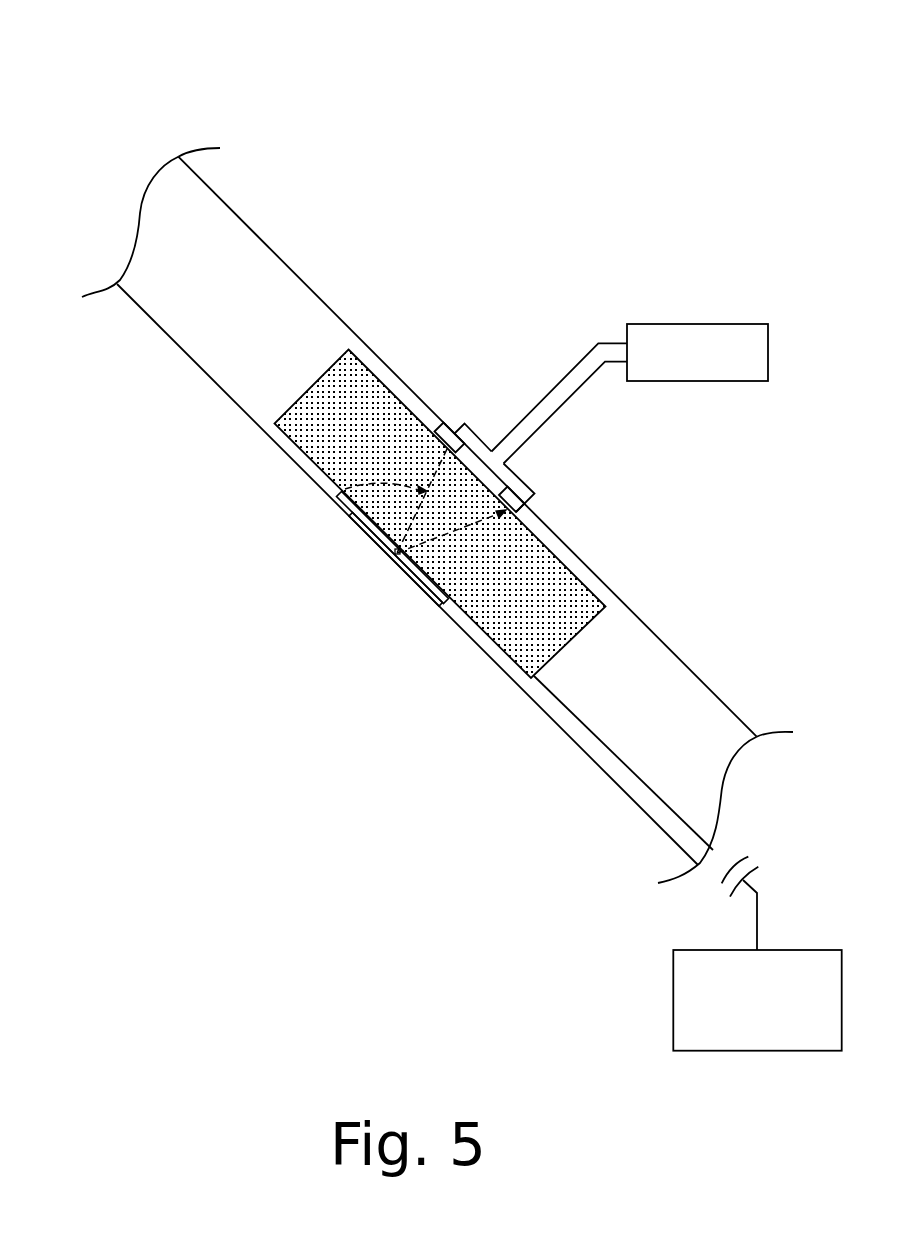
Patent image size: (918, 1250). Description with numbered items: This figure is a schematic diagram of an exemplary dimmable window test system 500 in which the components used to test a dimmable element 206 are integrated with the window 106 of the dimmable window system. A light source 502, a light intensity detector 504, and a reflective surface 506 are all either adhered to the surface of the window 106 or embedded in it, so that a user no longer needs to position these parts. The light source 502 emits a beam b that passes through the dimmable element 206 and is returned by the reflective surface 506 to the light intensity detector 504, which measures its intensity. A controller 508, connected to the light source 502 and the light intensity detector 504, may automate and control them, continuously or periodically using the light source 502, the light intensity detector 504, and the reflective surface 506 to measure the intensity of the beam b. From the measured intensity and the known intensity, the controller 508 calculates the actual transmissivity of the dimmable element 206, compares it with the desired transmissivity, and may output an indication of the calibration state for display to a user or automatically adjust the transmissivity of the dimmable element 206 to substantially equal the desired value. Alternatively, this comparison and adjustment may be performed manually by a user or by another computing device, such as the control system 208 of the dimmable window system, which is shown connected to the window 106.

The dimmable window test system 500 is at (110, 96).
The window 106 is at (205, 302).
The dimmable element 206 is at (290, 411).
The light source 502 is at (450, 432).
The light intensity detector 504 is at (533, 512).
The reflective surface 506 is at (420, 587).
The controller 508 is at (697, 324).
The control system 208 is at (673, 1001).
The beam b is at (345, 489).